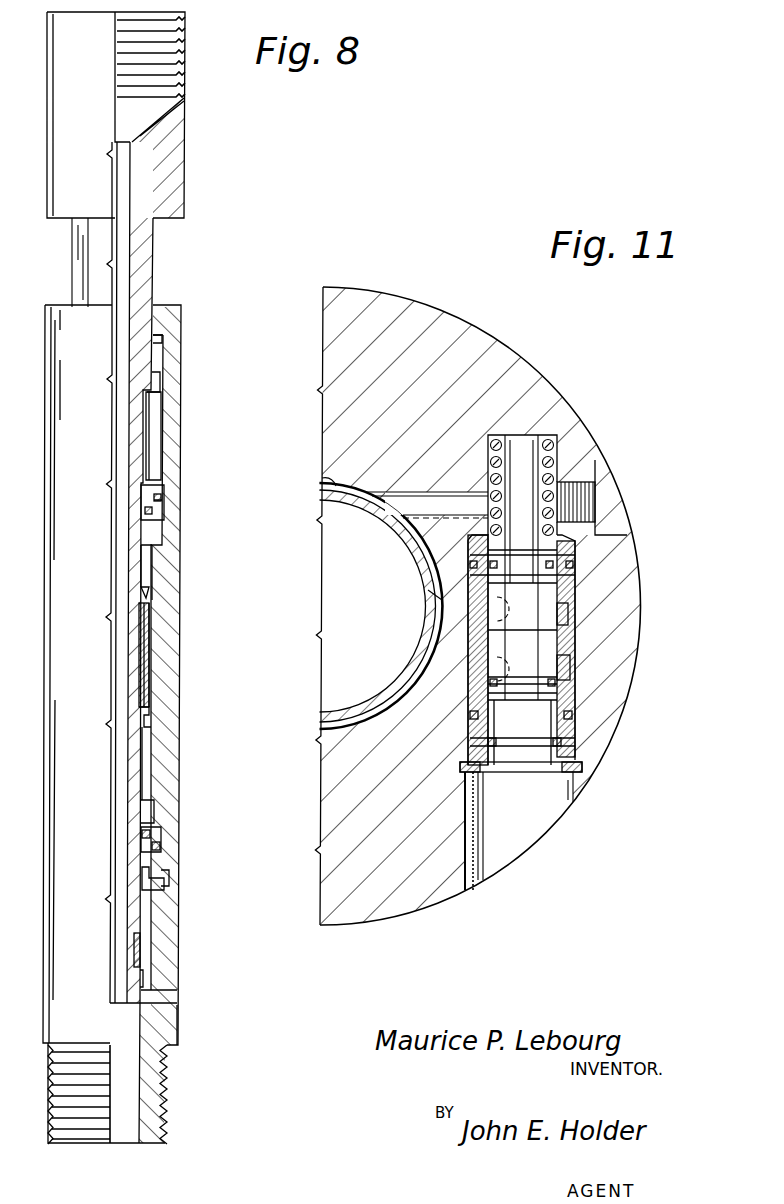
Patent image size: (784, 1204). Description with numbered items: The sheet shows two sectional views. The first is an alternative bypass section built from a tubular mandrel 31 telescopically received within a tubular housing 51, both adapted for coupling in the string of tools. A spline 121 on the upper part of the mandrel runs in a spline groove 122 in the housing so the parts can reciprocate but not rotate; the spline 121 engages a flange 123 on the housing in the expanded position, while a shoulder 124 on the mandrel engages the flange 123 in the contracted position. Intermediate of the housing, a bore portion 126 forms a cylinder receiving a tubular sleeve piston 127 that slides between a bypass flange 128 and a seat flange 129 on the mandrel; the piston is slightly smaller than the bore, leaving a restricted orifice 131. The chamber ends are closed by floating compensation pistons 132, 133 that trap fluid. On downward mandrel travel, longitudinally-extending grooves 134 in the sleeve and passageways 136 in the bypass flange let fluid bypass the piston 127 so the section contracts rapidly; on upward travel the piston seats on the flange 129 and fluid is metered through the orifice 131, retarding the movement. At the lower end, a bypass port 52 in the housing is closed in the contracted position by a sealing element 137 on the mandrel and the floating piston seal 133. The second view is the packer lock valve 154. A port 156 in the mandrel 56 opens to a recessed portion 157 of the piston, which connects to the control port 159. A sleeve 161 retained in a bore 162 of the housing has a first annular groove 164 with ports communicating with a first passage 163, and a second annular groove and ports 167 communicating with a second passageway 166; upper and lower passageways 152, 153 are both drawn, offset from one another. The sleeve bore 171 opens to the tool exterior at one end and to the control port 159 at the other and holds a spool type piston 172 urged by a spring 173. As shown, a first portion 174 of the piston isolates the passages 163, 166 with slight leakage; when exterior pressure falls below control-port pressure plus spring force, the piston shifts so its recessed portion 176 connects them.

In FIG. 8, the shoulder 124 is at (170, 195).
In FIG. 8, the tubular mandrel 31 is at (150, 244).
In FIG. 8, the tubular housing 51 is at (172, 353).
In FIG. 11, the tubular housing 51 is at (432, 310).
In FIG. 8, the bypass port 52 is at (165, 998).
In FIG. 8, the flange 123 is at (158, 333).
In FIG. 8, the spline 121 is at (148, 377).
In FIG. 8, the spline groove 122 is at (158, 417).
In FIG. 8, the floating compensation piston 132 is at (157, 490).
In FIG. 8, the passageways 136 is at (140, 595).
In FIG. 8, the bore portion 126 is at (150, 583).
In FIG. 8, the bypass flange 128 is at (150, 598).
In FIG. 8, the longitudinally-extending grooves 134 is at (140, 628).
In FIG. 8, the sleeve piston 127 is at (145, 660).
In FIG. 8, the restricted orifice 131 is at (150, 672).
In FIG. 8, the seat flange 129 is at (148, 720).
In FIG. 8, the floating compensation piston 133 is at (150, 845).
In FIG. 8, the sealing element 137 is at (141, 945).
In FIG. 11, the mandrel 56 is at (325, 497).
In FIG. 11, the recessed portion 157 is at (335, 472).
In FIG. 11, the control port 159 is at (422, 507).
In FIG. 11, the port 156 is at (442, 597).
In FIG. 11, the upper passageway 152 is at (492, 605).
In FIG. 11, the lower passageway 153 is at (492, 670).
In FIG. 11, the spring 173 is at (557, 447).
In FIG. 11, the spool type piston 172 is at (595, 474).
In FIG. 11, the recessed portion 176 is at (578, 583).
In FIG. 11, the first annular groove 164 is at (572, 601).
In FIG. 11, the first passage 163 is at (570, 624).
In FIG. 11, the first portion 174 is at (572, 650).
In FIG. 11, the second passageway 166 is at (582, 668).
In FIG. 11, the second annular groove and ports 167 is at (584, 684).
In FIG. 11, the valve 154 is at (582, 690).
In FIG. 11, the sleeve 161 is at (582, 767).
In FIG. 11, the sleeve bore 171 is at (545, 796).
In FIG. 11, the bore 162 is at (470, 855).